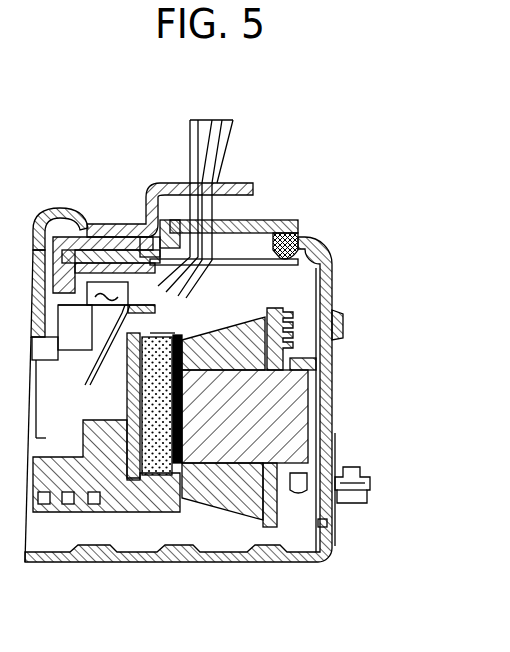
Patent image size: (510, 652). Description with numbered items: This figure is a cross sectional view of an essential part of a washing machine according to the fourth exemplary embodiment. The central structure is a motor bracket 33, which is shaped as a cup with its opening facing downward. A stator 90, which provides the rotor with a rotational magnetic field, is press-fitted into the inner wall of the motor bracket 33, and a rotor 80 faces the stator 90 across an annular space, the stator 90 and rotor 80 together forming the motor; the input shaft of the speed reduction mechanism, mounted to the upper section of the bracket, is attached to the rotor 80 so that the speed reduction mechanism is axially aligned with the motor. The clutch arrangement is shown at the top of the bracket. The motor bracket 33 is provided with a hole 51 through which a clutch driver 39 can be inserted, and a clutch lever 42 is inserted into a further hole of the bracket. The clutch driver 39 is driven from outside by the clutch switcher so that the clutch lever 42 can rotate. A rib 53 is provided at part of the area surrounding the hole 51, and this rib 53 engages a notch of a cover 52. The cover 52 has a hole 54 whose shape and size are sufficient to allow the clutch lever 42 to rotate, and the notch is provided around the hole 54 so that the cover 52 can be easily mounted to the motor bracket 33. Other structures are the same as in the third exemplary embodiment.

The motor bracket 33 is at (327, 422).
The clutch driver 39 is at (208, 167).
The clutch lever 42 is at (222, 145).
The hole 51 is at (267, 250).
The cover 52 is at (275, 228).
The rib 53 is at (148, 220).
The hole 54 is at (220, 233).
The rotor 80 is at (155, 510).
The stator 90 is at (300, 433).